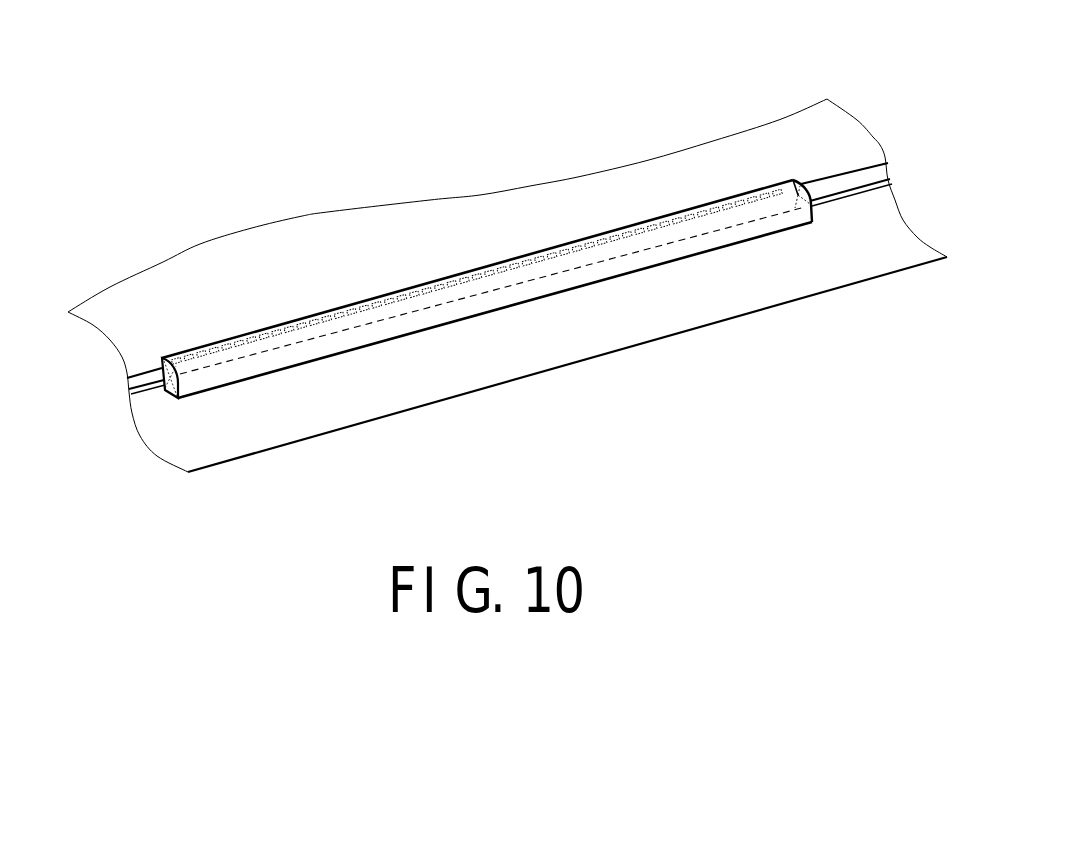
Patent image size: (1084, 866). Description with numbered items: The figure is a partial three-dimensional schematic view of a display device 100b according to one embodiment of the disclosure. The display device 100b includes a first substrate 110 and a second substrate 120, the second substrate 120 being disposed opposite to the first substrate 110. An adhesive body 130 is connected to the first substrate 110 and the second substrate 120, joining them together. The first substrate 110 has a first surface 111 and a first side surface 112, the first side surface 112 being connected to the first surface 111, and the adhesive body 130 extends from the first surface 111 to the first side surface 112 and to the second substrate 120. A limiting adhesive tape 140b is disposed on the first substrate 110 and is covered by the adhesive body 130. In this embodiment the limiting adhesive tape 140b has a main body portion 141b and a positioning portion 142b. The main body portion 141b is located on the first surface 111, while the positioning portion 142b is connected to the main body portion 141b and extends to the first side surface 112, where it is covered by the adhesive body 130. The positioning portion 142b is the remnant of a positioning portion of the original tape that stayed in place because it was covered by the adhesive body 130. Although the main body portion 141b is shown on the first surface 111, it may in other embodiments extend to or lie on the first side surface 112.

The display device 100b is at (108, 75).
The first substrate 110 is at (823, 53).
The first surface 111 is at (767, 150).
The first side surface 112 is at (817, 190).
The second substrate 120 is at (858, 255).
The adhesive body 130 is at (485, 312).
The limiting adhesive tape 140b is at (267, 173).
The main body portion 141b is at (260, 330).
The positioning portion 142b is at (145, 363).